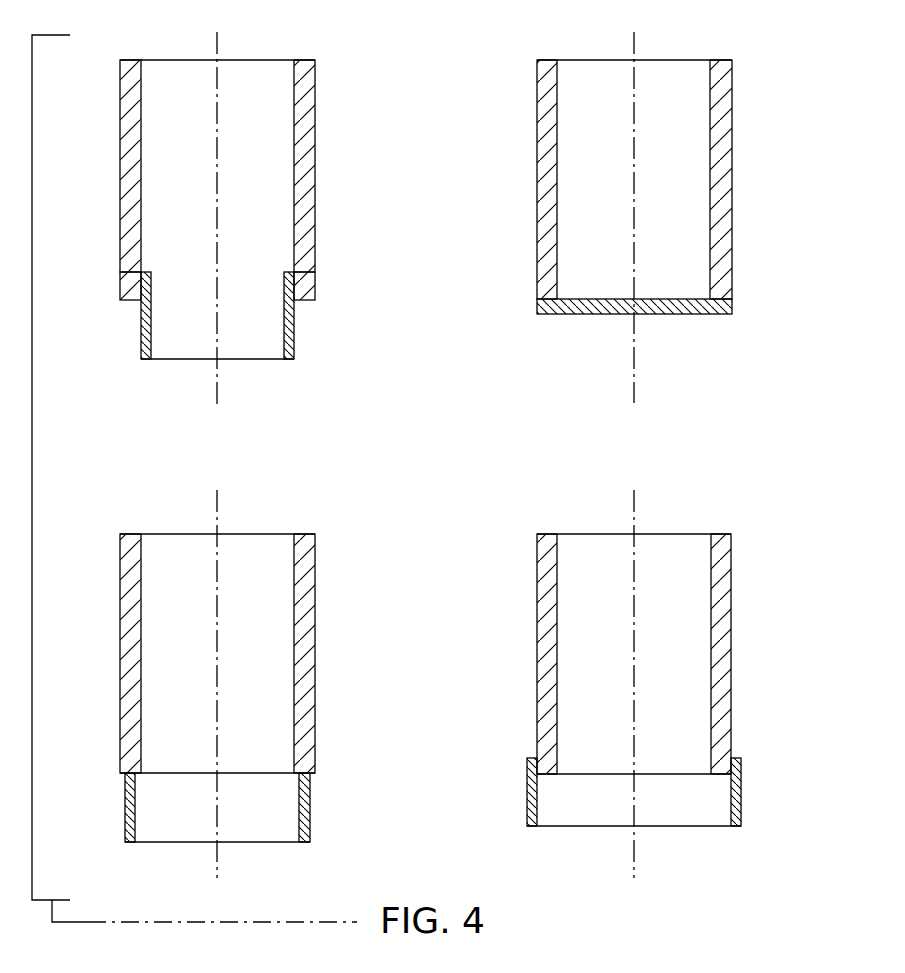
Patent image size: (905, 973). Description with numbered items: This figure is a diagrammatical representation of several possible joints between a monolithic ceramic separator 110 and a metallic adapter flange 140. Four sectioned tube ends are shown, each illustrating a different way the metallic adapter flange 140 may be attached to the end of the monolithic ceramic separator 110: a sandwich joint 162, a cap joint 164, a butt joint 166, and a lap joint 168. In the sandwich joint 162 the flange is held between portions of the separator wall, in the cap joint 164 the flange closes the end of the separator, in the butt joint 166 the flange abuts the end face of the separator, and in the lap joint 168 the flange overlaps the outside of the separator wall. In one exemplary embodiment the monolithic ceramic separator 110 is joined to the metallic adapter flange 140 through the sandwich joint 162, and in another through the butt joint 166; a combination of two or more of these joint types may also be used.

The monolithic ceramic separator 110 is at (316, 227).
The metallic adapter flange 140 is at (295, 332).
The sandwich joint 162 is at (257, 230).
The cap joint 164 is at (601, 333).
The butt joint 166 is at (176, 860).
The lap joint 168 is at (591, 852).